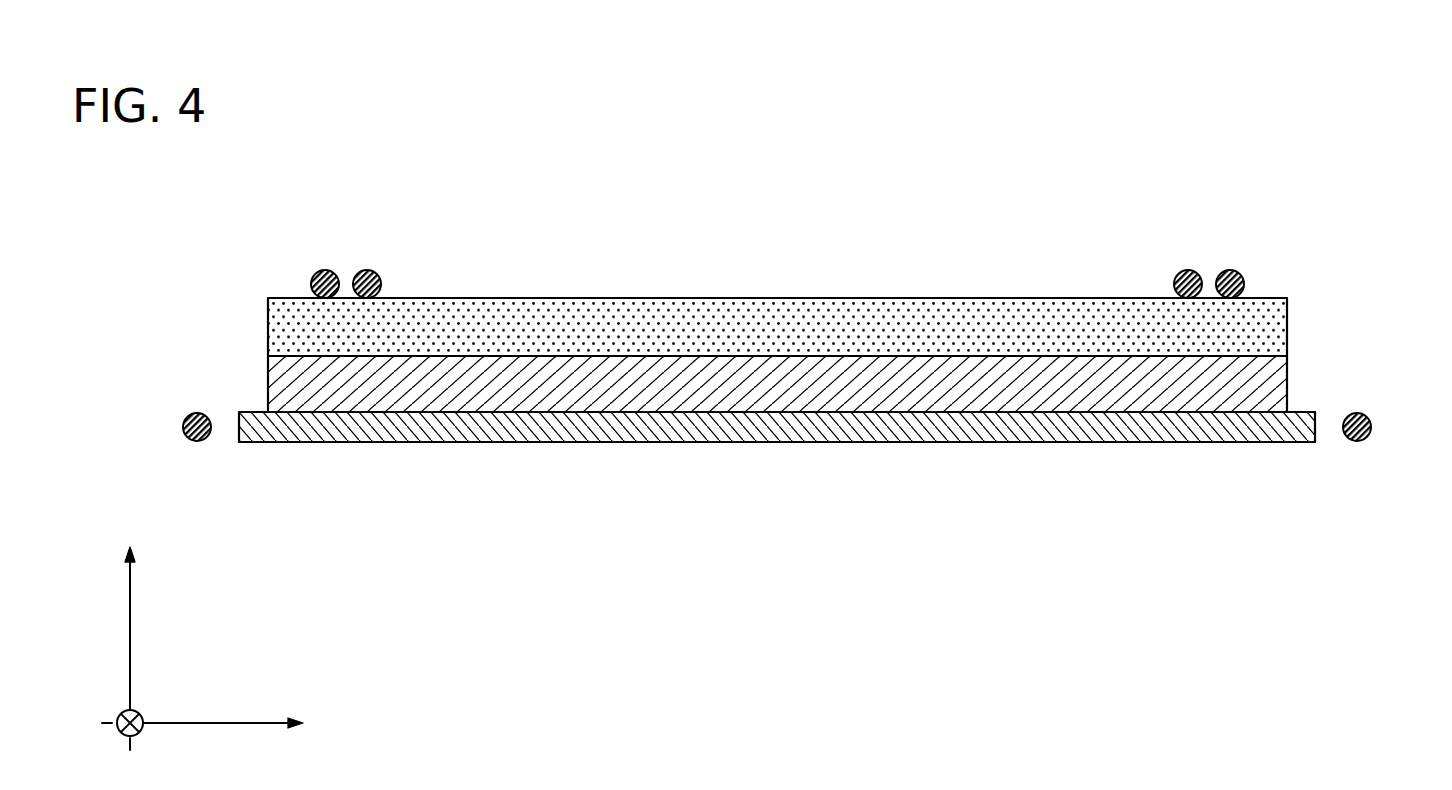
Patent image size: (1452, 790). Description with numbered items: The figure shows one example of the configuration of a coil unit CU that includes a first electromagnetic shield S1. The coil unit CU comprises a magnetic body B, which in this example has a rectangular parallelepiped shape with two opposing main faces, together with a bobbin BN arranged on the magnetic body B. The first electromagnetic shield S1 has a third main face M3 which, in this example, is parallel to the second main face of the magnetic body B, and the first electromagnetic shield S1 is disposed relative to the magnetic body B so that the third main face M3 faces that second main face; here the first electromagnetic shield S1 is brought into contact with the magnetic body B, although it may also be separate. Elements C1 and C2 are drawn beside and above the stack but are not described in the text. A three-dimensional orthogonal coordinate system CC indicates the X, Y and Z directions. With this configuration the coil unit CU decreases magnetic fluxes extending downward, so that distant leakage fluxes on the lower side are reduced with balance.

The coil unit CU is at (673, 248).
The bobbin BN is at (781, 297).
The magnetic body B is at (822, 413).
The first electromagnetic shield S1 is at (741, 443).
The third main face M3 is at (1300, 410).
The first electronic components C1 is at (350, 258).
The second electronic components C2 is at (197, 400).
The three-dimensional orthogonal coordinate system CC is at (142, 703).